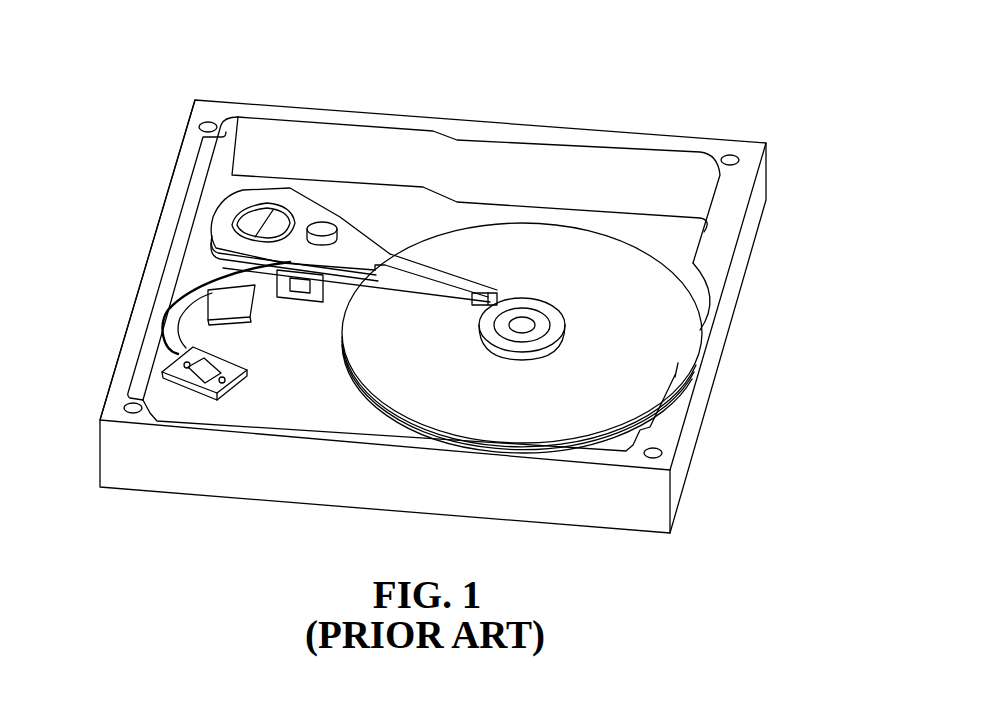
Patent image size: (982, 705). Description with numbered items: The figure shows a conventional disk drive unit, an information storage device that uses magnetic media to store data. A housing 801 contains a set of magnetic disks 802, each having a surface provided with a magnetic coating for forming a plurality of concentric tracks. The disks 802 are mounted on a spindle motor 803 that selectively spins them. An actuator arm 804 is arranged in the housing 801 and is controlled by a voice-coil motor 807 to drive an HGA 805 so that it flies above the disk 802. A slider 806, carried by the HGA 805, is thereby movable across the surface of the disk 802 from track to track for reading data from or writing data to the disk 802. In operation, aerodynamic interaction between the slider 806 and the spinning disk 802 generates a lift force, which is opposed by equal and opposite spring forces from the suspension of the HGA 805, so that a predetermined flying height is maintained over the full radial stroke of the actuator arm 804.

The housing 801 is at (693, 418).
The magnetic disks 802 is at (645, 298).
The spindle motor 803 is at (565, 333).
The actuator arm 804 is at (362, 250).
The HGA 805 is at (453, 283).
The slider 806 is at (500, 290).
The voice-coil motor 807 is at (237, 298).